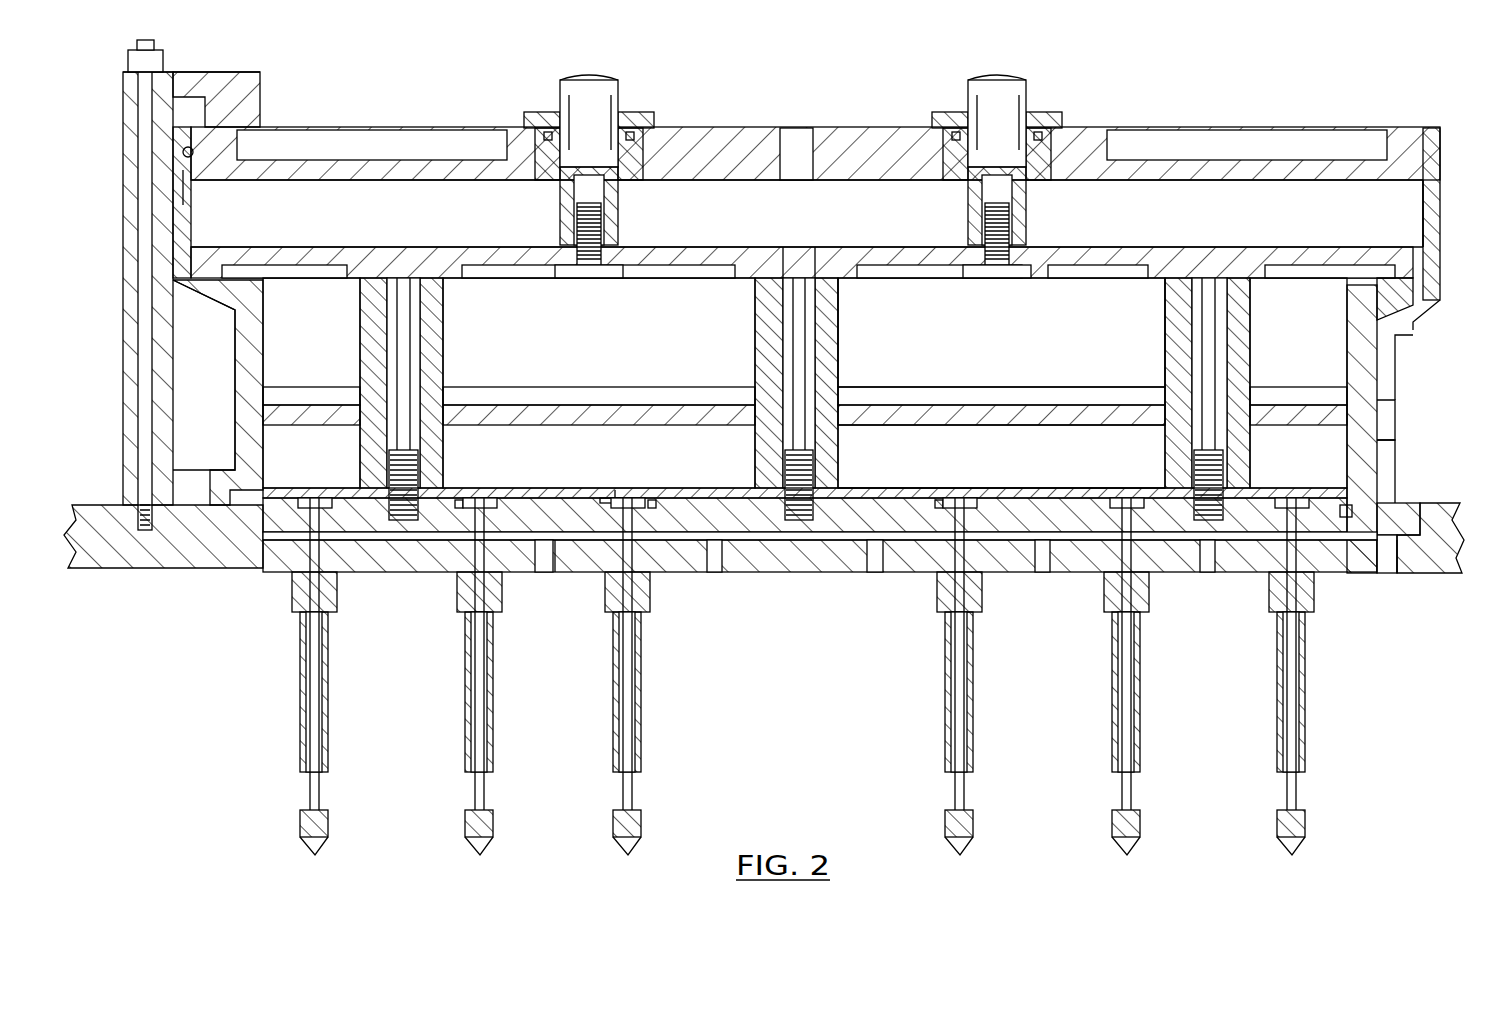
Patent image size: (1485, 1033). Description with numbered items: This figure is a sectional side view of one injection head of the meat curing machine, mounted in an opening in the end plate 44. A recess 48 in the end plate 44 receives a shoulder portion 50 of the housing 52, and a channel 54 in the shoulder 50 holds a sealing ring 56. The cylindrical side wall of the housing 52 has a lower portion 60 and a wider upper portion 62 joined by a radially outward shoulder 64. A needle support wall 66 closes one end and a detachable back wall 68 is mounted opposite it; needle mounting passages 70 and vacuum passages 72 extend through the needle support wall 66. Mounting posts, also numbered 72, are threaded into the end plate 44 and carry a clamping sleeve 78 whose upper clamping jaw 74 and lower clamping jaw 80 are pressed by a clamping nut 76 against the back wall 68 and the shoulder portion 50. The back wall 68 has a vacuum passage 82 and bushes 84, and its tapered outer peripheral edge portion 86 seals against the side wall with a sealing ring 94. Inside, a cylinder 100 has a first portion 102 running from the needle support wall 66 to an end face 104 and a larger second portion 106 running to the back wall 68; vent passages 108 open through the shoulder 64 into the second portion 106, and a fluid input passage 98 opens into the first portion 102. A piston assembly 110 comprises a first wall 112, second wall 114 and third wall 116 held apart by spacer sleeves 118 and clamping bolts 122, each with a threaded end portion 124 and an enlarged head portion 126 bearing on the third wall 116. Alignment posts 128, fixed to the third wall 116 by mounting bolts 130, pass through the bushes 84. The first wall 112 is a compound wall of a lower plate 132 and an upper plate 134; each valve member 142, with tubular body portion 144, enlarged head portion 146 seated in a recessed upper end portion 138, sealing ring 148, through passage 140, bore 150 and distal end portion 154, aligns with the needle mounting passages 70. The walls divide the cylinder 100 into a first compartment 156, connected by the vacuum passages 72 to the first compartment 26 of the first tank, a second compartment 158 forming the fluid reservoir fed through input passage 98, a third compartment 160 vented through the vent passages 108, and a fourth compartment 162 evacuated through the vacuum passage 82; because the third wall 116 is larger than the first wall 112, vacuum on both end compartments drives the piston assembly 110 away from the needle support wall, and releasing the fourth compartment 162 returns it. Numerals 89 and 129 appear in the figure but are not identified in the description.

The first compartment of the first tank 26 is at (811, 682).
The end plate 44 is at (178, 570).
The recess 48 is at (1430, 503).
The shoulder portion 50 is at (1400, 510).
The housing 52 is at (1395, 470).
The channel 54 is at (1380, 540).
The sealing ring 56 is at (1347, 500).
The lower portion 60 is at (1378, 414).
The upper portion 62 is at (1432, 310).
The shoulder 64 is at (1393, 330).
The needle support wall 66 is at (1083, 572).
The back wall 68 is at (1098, 128).
The needle mounting passages 70 is at (500, 575).
The vacuum passages 72 is at (150, 432).
The upper clamping jaw 74 is at (245, 92).
The clamping nut 76 is at (163, 56).
The clamping sleeve 78 is at (155, 392).
The lower clamping jaw 80 is at (230, 470).
The vacuum passage 82 is at (797, 128).
The bushes 84 is at (633, 180).
The outer peripheral edge portion 86 is at (195, 160).
The passage 89 is at (185, 190).
The sealing ring 94 is at (195, 152).
The fluid input passage 98 is at (1378, 425).
The cylinder 100 is at (921, 345).
The first portion 102 is at (969, 375).
The end face 104 is at (1350, 290).
The second portion 106 is at (836, 228).
The vent passages 108 is at (190, 300).
The piston assembly 110 is at (1148, 235).
The first wall 112 is at (850, 490).
The second wall 114 is at (985, 425).
The third wall 116 is at (965, 280).
The spacer sleeve 118 is at (765, 470).
The clamping bolts 122 is at (790, 320).
The threaded end portion 124 is at (815, 520).
The enlarged head portion 126 is at (792, 245).
The alignment posts 128 is at (1027, 220).
The screw 129 is at (560, 215).
The mounting bolts 130 is at (595, 278).
The lower plate 132 is at (660, 488).
The upper plate 134 is at (660, 488).
The recessed upper end portion 138 is at (660, 510).
The through passage 140 is at (315, 498).
The valve member 142 is at (605, 512).
The tubular body portion 144 is at (935, 510).
The enlarged head portion 146 is at (605, 497).
The sealing ring 148 is at (612, 490).
The bore 150 is at (625, 555).
The distal end portion 154 is at (618, 798).
The first compartment 156 is at (765, 572).
The second compartment 158 is at (1061, 464).
The third compartment 160 is at (1012, 339).
The fourth compartment 162 is at (1118, 226).